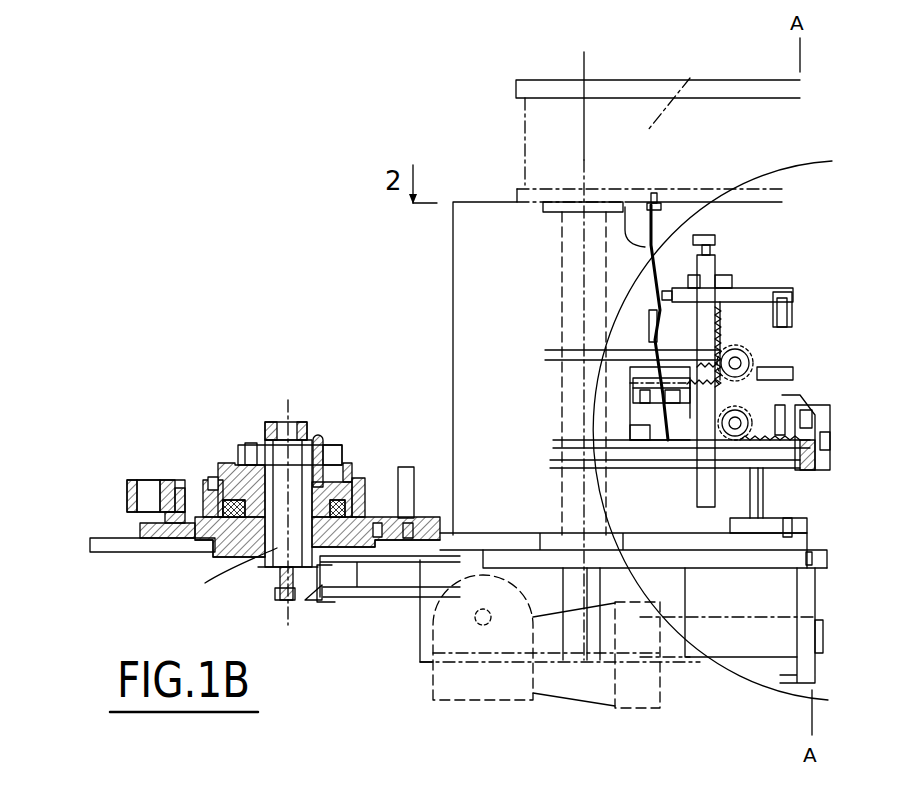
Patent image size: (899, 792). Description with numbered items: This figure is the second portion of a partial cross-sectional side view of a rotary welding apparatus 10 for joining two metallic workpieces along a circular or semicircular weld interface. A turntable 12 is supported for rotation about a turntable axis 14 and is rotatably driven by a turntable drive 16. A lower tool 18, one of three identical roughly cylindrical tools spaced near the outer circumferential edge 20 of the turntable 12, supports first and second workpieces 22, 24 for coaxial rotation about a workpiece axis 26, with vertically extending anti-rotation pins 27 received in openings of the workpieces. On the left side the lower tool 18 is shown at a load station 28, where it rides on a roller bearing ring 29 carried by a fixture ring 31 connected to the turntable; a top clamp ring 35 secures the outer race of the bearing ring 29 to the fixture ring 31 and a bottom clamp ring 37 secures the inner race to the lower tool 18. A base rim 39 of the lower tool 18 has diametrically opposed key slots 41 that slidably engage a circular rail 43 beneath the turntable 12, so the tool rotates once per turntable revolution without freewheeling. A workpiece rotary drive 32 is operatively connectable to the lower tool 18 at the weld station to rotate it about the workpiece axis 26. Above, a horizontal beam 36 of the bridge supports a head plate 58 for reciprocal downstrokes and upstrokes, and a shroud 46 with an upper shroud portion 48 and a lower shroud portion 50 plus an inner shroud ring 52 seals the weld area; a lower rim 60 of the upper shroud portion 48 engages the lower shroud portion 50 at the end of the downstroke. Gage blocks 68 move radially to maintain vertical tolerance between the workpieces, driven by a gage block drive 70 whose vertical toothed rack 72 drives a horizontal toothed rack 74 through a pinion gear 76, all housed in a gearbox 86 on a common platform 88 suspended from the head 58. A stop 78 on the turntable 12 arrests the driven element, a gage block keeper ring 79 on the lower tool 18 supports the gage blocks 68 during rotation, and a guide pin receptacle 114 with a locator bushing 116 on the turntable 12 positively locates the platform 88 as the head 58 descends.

The rotary welding apparatus 10 is at (440, 60).
The turntable 12 is at (105, 548).
The turntable axis 14 is at (587, 67).
The turntable drive 16 is at (422, 638).
The lower tool 18 is at (336, 436).
The outer circumferential edge 20 is at (90, 543).
The first workpiece 22 is at (270, 422).
The second workpiece 24 is at (225, 467).
The workpiece axis 26 is at (289, 410).
The anti-rotation pin 27 is at (342, 458).
The load station 28 is at (232, 302).
The roller bearing ring 29 is at (208, 550).
The fixture ring 31 is at (366, 562).
The workpiece rotary drive 32 is at (735, 615).
The top clamp ring 35 is at (406, 485).
The horizontal beam 36 is at (676, 88).
The bottom clamp ring 37 is at (330, 600).
The base rim 39 is at (265, 570).
The key slot 41 is at (215, 583).
The circular rail 43 is at (282, 600).
The shroud 46 is at (648, 247).
The upper shroud portion 48 is at (625, 208).
The lower shroud portion 50 is at (662, 228).
The inner shroud ring 52 is at (790, 440).
The head plate 58 is at (606, 355).
The lower rim 60 is at (660, 350).
The gage block 68 is at (830, 452).
The gage block drive 70 is at (760, 372).
The vertical toothed rack 72 is at (708, 262).
The horizontal toothed rack 74 is at (548, 458).
The pinion gear 76 is at (752, 368).
The stop 78 is at (795, 525).
The gage block keeper ring 79 is at (352, 465).
The gearbox 86 is at (735, 312).
The platform 88 is at (645, 468).
The guide pin receptacle 114 is at (128, 495).
The locator bushing 116 is at (148, 480).